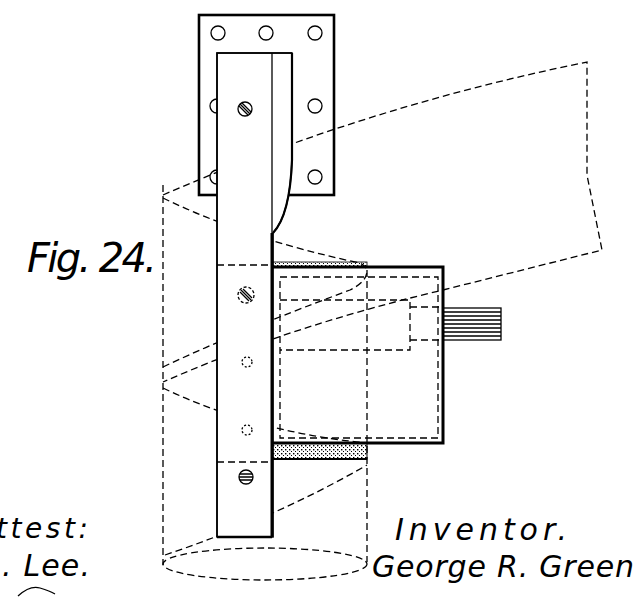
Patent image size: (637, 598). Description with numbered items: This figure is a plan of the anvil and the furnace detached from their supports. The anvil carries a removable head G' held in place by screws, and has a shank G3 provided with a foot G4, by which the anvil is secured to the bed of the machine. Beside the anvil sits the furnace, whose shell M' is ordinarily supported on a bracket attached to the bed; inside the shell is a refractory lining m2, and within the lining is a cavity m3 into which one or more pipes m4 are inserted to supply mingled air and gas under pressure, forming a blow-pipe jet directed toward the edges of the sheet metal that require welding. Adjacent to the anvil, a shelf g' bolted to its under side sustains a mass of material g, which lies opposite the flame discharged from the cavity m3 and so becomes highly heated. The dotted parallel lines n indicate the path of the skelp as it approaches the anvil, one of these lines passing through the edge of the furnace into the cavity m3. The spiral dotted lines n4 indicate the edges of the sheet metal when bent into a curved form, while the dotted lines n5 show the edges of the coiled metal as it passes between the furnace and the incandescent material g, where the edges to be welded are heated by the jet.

The foot G4 is at (266, 105).
The shank G3 is at (286, 120).
The removable head G' is at (254, 295).
The path of the skelp n is at (382, 319).
The edges of the bent sheet metal n4 is at (190, 416).
The edges of the coiled metal n5 is at (294, 320).
The shell of the furnace M' is at (364, 385).
The refractory lining m2 is at (415, 378).
The cavity m3 is at (333, 352).
The pipe m4 is at (503, 326).
The material g is at (335, 368).
The shelf g' is at (319, 478).